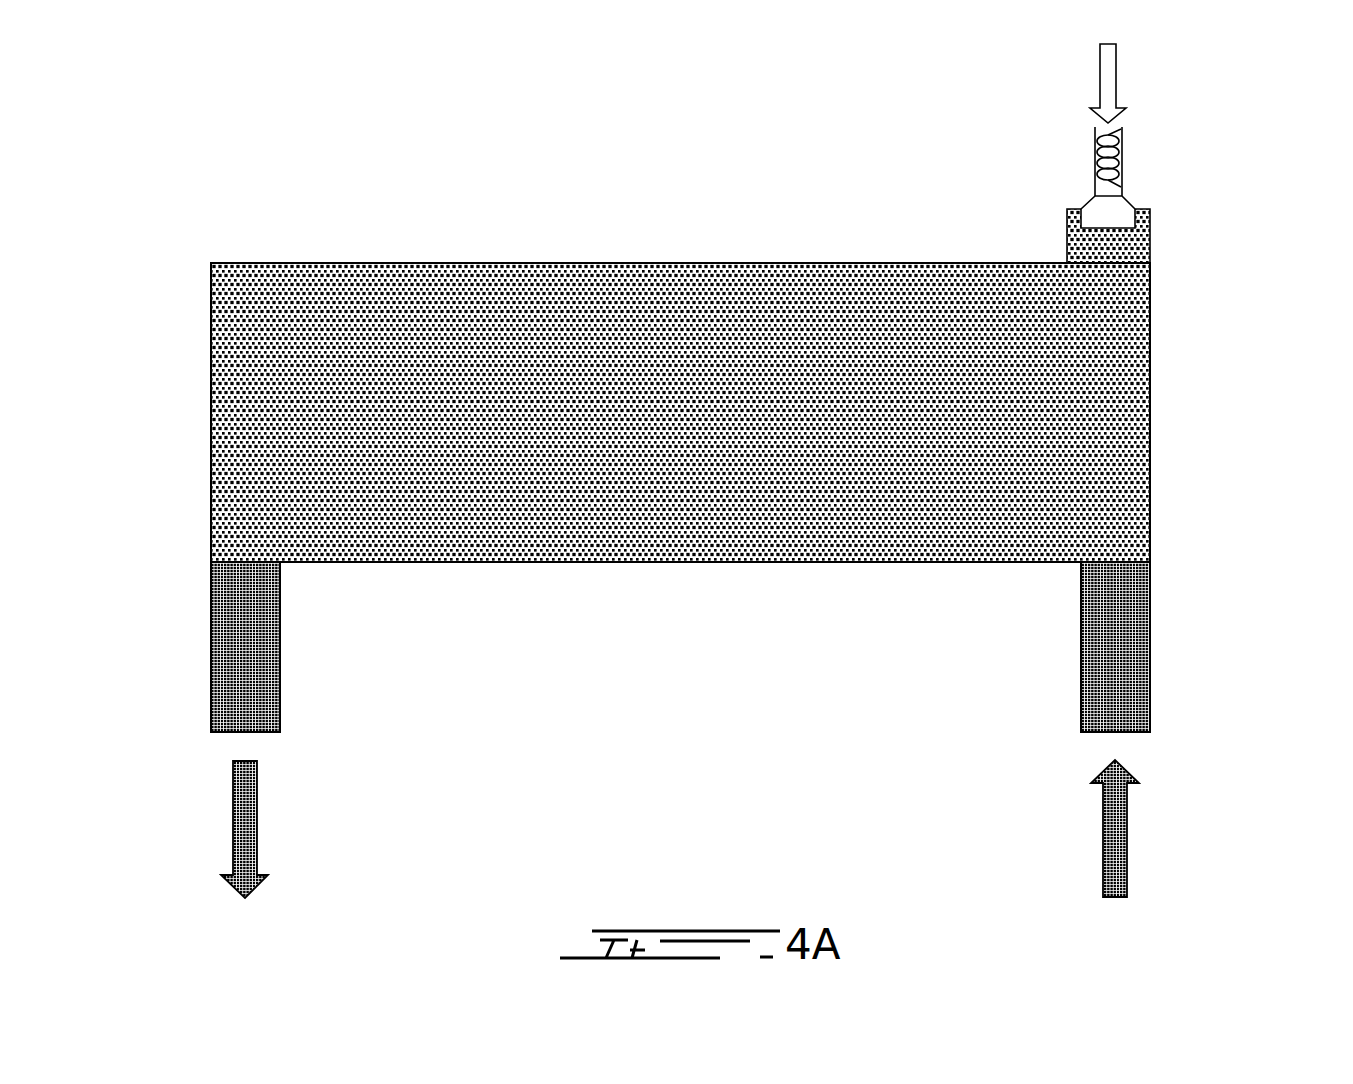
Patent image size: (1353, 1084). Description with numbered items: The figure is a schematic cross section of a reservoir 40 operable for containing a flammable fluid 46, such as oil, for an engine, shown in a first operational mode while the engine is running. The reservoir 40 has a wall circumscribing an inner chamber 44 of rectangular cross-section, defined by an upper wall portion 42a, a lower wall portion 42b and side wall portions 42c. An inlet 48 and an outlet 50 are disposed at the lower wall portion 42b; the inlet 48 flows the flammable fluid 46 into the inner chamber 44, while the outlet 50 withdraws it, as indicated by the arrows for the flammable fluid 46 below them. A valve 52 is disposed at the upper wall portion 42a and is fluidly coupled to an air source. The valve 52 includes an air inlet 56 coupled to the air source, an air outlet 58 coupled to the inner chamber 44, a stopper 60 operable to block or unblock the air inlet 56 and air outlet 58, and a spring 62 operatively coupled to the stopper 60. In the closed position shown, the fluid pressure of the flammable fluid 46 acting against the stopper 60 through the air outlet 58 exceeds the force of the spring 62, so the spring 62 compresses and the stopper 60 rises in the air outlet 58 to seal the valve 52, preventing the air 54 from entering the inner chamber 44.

The reservoir 40 is at (193, 168).
The upper wall portion 42a is at (561, 263).
The lower wall portion 42b is at (530, 563).
The side wall portions 42c is at (211, 392).
The inner chamber 44 is at (1060, 373).
The flammable fluid 46 is at (245, 830).
The inlet 48 is at (1103, 637).
The outlet 50 is at (231, 643).
The valve 52 is at (1127, 175).
The air 54 is at (1110, 85).
The air inlet 56 is at (1095, 135).
The air outlet 58 is at (1102, 243).
The stopper 60 is at (1098, 212).
The spring 62 is at (1112, 156).